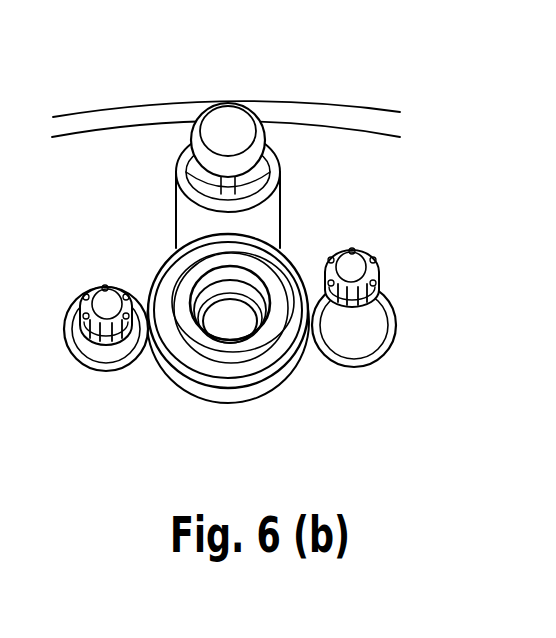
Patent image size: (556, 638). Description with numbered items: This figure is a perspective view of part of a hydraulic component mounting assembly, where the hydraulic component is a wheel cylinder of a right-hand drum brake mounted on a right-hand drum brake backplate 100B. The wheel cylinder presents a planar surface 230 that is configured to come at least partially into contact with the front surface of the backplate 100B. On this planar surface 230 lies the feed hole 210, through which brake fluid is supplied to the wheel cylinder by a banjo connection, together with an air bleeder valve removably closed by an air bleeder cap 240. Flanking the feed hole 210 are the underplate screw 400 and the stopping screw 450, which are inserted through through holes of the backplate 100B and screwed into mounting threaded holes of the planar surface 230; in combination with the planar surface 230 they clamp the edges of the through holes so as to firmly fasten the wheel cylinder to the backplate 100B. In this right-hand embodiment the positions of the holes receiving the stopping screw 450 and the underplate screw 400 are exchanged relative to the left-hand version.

The right-hand drum brake backplate 100B is at (357, 172).
The feed hole 210 is at (224, 316).
The planar surface 230 is at (263, 222).
The air bleeder cap 240 is at (231, 125).
The underplate screw 400 is at (103, 305).
The stopping screw 450 is at (355, 268).